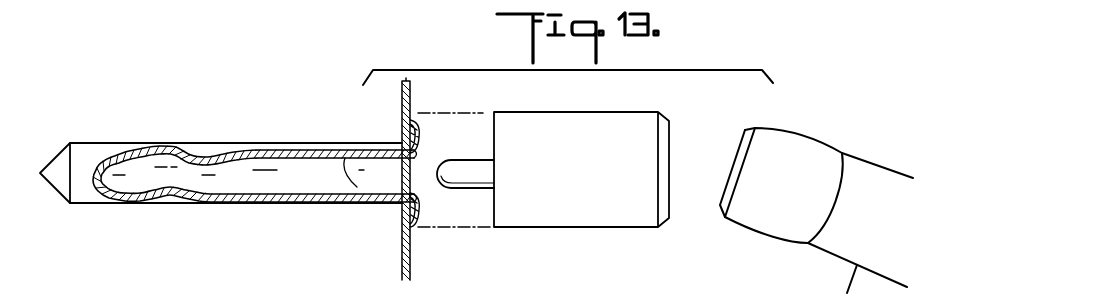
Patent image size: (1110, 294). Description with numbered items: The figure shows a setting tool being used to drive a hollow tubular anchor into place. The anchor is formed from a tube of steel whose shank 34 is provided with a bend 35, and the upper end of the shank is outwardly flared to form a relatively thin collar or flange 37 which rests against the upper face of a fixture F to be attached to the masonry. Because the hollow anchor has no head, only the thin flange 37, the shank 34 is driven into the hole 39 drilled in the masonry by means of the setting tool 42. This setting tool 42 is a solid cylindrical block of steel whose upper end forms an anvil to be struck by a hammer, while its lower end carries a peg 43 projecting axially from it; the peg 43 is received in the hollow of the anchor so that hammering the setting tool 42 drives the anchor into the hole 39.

The shank 34 is at (280, 207).
The bend 35 is at (180, 145).
The flange 37 is at (417, 221).
The hole 39 is at (83, 198).
The setting tool 42 is at (572, 220).
The peg 43 is at (462, 162).
The fixture F is at (410, 84).